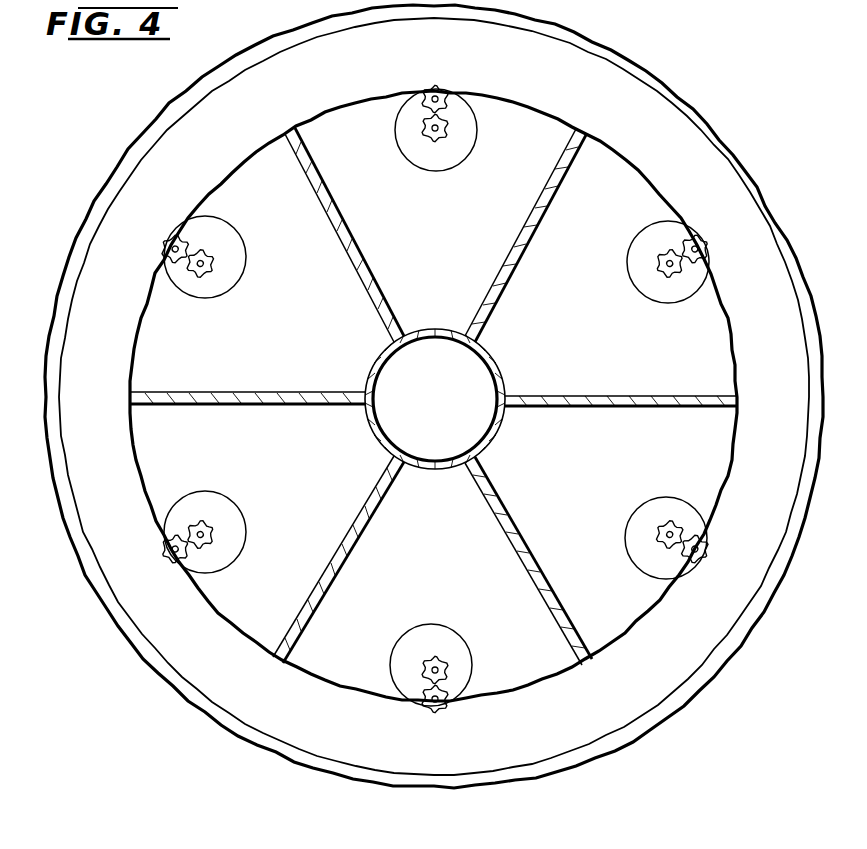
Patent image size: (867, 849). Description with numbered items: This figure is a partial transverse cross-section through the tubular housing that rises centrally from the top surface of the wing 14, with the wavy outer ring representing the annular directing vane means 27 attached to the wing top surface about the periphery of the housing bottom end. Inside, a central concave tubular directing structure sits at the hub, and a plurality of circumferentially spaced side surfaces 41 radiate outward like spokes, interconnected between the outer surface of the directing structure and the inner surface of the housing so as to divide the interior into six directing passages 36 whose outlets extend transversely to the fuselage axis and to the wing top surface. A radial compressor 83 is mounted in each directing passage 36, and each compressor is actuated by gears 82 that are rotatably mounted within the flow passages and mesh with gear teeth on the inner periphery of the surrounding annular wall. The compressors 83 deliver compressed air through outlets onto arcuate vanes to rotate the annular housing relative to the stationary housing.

The central oval lifting surface or wing 14 is at (711, 667).
The annular directing vane means 27 is at (639, 711).
The directing passages 36 is at (445, 256).
The circumferentially spaced side surfaces 41 is at (386, 296).
The gears 82 is at (440, 94).
The radial compressors 83 is at (472, 141).